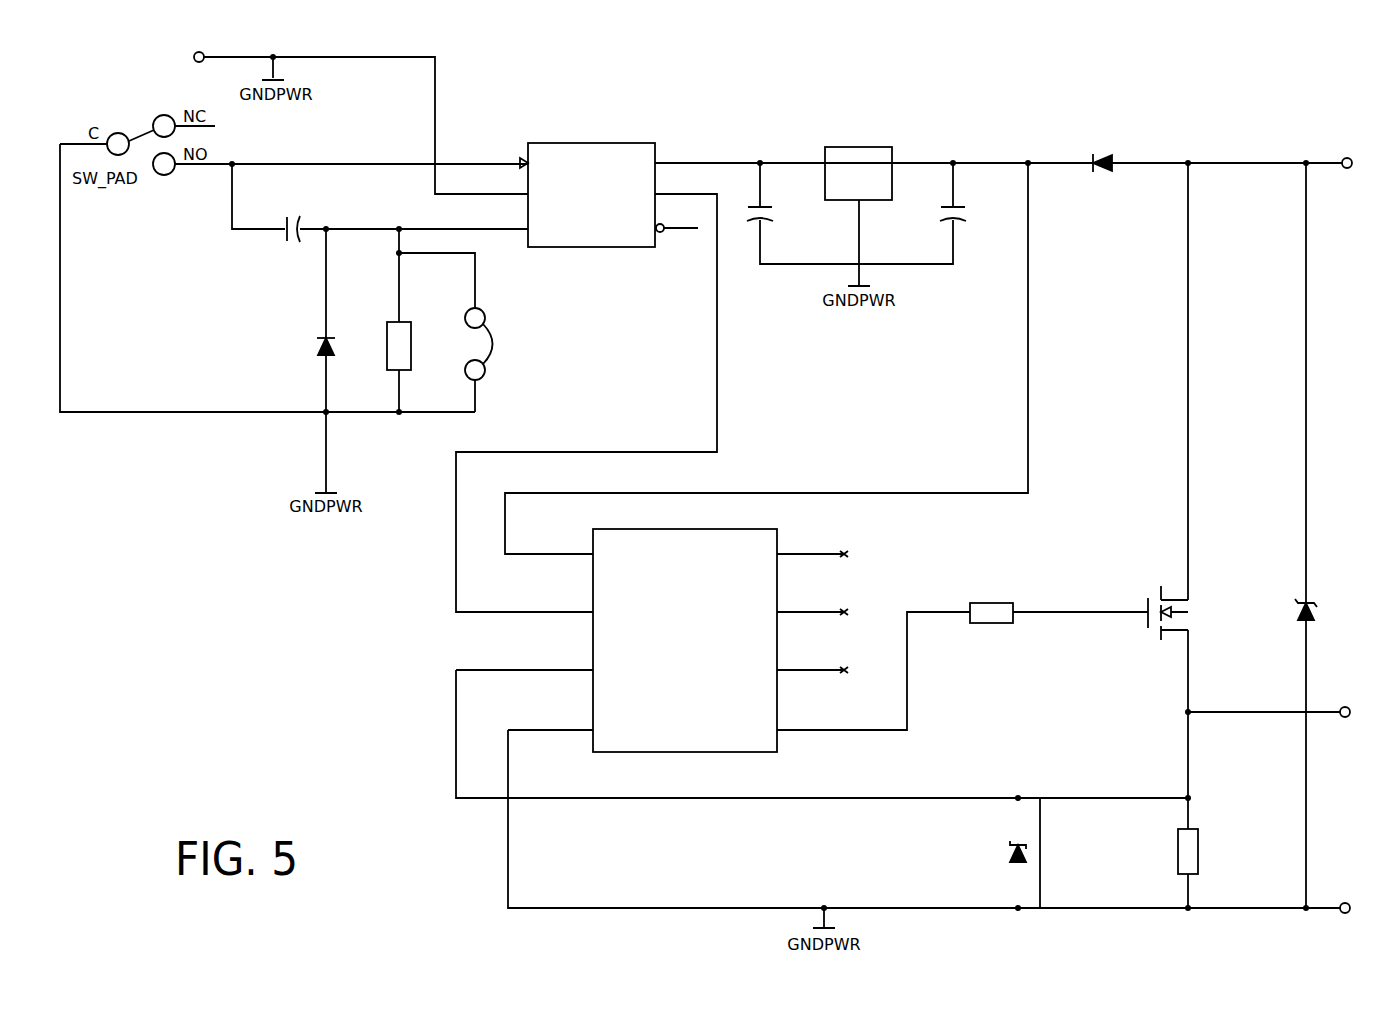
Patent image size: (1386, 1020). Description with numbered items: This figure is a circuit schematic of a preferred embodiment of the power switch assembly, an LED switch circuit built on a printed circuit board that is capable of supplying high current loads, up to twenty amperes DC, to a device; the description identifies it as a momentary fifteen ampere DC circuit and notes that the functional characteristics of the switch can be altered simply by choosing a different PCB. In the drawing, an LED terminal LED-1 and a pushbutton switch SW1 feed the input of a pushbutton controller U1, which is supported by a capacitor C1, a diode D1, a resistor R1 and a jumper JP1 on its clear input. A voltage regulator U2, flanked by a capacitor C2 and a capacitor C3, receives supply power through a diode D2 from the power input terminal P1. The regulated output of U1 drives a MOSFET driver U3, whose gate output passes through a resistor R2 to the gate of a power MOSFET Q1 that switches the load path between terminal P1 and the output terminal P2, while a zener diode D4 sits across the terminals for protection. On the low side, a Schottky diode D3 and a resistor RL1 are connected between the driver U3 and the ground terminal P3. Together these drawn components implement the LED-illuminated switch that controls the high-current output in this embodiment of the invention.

The LED connection pad LED-1 is at (173, 56).
The switch SW1 is at (137, 139).
The capacitor 1uf C1 is at (281, 238).
The diode 1N4148 D1 is at (322, 346).
The resistor 100K R1 is at (409, 346).
The jumper JP1 is at (478, 346).
The MAX16054AZT+T pushbutton controller U1 is at (588, 196).
The LM3480 voltage regulator U2 is at (858, 176).
The capacitor 1uf C2 is at (768, 213).
The capacitor 10uf C3 is at (965, 213).
The diode 1N4148 D2 is at (1123, 165).
The terminal P1 is at (1359, 163).
The terminal P2 is at (1357, 712).
The terminal P3 is at (1357, 908).
The MIC5014 MOSFET driver U3 is at (684, 642).
The resistor 10 ohm R2 is at (991, 624).
The N-channel MOSFET Q1 is at (1135, 617).
The zener diode D4 is at (1305, 610).
The schottky diode D3 is at (1019, 853).
The resistor 15K RL1 is at (1197, 851).